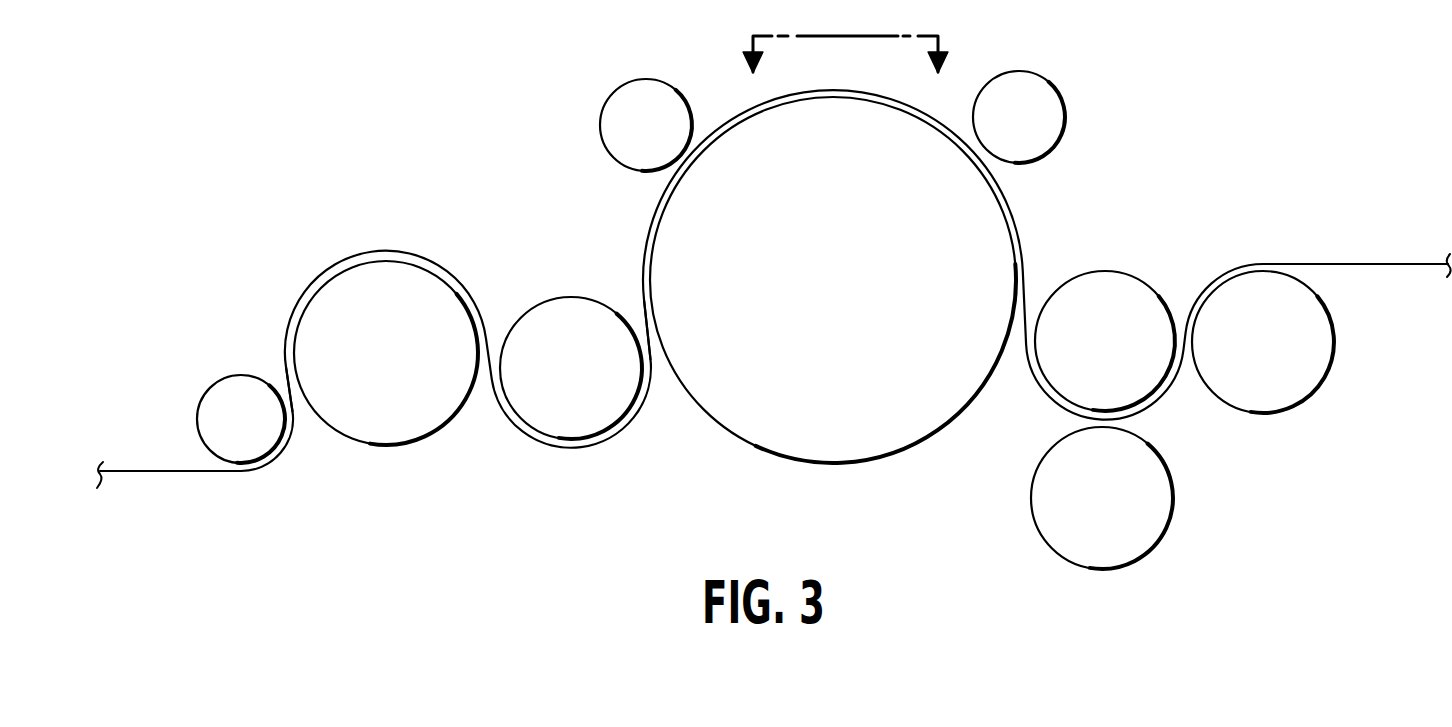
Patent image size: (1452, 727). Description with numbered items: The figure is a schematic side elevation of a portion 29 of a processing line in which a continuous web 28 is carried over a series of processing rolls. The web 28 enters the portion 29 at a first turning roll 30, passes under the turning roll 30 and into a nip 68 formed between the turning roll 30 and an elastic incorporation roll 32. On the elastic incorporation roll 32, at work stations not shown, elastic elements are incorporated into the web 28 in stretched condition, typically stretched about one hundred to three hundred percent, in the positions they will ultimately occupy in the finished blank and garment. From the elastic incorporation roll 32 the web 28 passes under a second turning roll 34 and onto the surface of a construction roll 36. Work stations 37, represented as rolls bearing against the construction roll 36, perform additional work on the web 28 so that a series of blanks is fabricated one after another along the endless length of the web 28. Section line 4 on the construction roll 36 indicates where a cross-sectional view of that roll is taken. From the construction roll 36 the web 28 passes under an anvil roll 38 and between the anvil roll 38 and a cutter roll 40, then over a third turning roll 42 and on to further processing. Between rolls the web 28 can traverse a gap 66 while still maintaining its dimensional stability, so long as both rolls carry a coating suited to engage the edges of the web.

The continuous web 28 is at (187, 474).
The portion of the processing line 29 is at (382, 205).
The first turning roll 30 is at (242, 375).
The elastic incorporation roll 32 is at (340, 362).
The second turning roll 34 is at (567, 297).
The construction roll 36 is at (738, 273).
The work stations 37 is at (602, 113).
The anvil roll 38 is at (1125, 272).
The cutter roll 40 is at (1030, 492).
The third turning roll 42 is at (1318, 387).
The gap 66 is at (657, 372).
The nip 68 is at (300, 412).
The section line 4- 4 is at (845, 67).